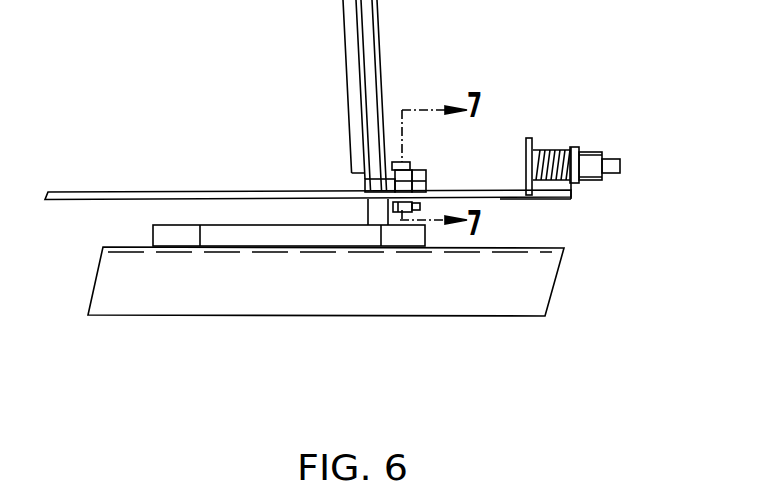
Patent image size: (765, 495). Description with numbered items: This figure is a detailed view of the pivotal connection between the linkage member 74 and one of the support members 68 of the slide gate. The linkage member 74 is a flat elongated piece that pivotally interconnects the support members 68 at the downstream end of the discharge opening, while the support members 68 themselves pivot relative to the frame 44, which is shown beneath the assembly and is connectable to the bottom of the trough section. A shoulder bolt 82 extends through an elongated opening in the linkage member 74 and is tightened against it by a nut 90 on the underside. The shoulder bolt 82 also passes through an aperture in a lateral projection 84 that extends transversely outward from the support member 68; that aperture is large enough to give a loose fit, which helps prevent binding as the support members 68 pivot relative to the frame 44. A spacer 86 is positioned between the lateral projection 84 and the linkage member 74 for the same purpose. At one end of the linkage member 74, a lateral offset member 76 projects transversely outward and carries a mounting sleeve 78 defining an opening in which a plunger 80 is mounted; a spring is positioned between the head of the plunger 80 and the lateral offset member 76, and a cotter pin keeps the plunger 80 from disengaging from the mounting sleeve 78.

The frame 44 is at (323, 315).
The support member 68 is at (345, 43).
The linkage member 74 is at (130, 192).
The lateral offset member 76 is at (580, 189).
The mounting sleeve 78 is at (590, 150).
The plunger 80 is at (532, 135).
The shoulder bolt 82 is at (410, 165).
The lateral projection 84 is at (426, 173).
The spacer 86 is at (365, 183).
The nut 90 is at (413, 207).